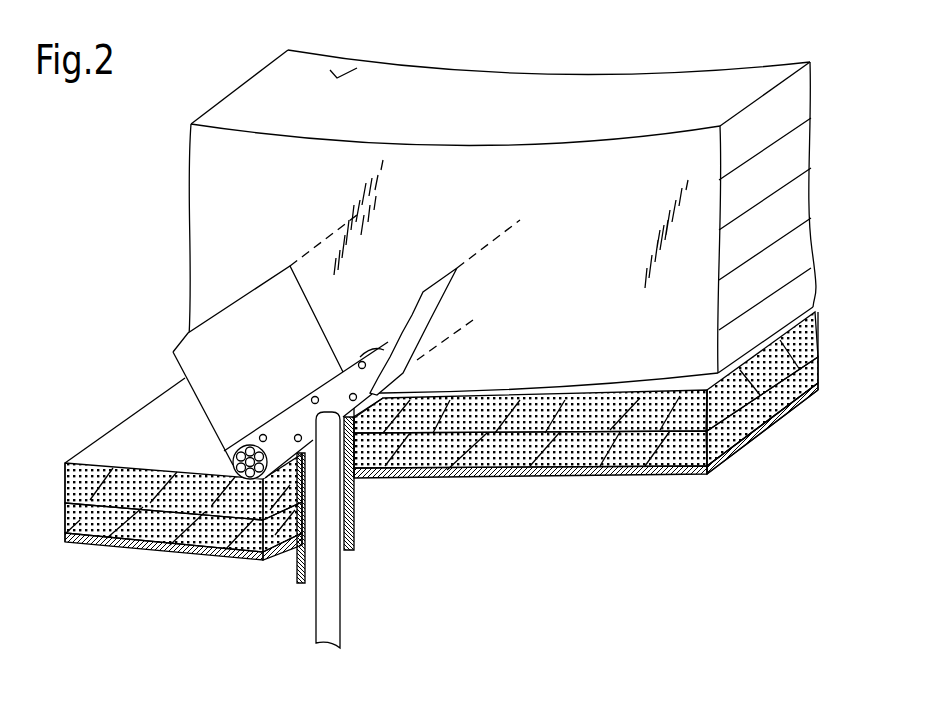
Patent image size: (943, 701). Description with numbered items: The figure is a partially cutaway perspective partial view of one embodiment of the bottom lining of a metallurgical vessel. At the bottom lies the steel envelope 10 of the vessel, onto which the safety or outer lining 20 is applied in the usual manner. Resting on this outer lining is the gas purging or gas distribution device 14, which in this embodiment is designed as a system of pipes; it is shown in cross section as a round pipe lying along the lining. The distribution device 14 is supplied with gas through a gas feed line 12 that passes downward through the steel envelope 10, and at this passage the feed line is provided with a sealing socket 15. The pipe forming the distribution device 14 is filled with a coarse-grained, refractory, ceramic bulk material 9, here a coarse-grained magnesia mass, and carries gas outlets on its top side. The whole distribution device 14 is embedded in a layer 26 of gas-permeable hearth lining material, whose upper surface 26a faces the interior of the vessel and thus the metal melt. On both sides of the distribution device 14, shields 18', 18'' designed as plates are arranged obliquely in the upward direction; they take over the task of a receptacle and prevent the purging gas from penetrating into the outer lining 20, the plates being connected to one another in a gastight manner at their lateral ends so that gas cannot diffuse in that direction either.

The layer of gas-permeable hearth lining material 26 is at (217, 183).
The surface 26a is at (363, 63).
The shield 18' is at (323, 344).
The shield 18'' is at (445, 307).
The gas distribution device 14 is at (270, 425).
The coarse-grained refractory ceramic bulk material 9 is at (238, 507).
The steel envelope 10 is at (643, 473).
The safety or outer lining 20 is at (470, 480).
The sealing socket 15 is at (355, 548).
The gas feed line 12 is at (330, 605).